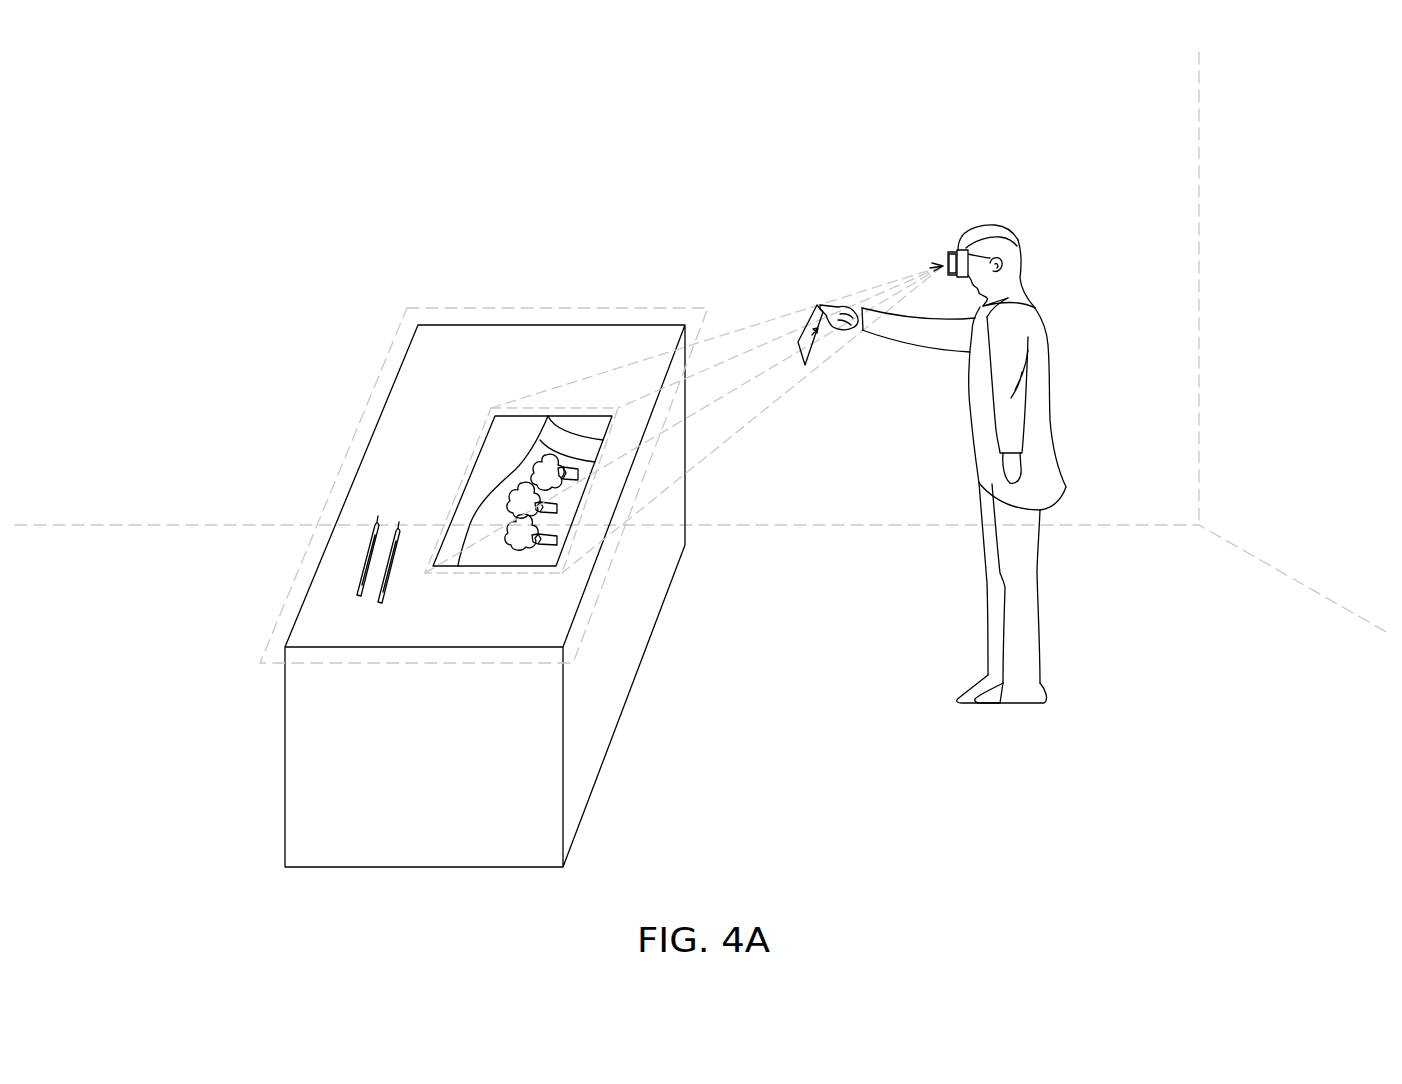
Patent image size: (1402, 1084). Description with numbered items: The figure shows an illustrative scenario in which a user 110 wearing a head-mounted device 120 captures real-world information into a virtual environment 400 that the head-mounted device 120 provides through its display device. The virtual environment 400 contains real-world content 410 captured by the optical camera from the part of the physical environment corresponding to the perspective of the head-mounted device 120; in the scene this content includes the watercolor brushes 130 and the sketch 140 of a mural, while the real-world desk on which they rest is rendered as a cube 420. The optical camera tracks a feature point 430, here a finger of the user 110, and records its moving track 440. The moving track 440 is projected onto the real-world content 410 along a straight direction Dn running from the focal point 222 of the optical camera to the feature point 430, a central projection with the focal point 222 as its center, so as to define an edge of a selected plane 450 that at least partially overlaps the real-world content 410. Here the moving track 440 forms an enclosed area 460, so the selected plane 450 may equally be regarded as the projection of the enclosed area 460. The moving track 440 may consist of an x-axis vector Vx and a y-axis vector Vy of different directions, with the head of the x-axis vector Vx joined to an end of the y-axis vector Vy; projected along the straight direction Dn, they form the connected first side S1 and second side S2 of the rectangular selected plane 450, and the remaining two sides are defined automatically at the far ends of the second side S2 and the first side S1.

The virtual environment 400 is at (79, 81).
The user 110 is at (1038, 328).
The head-mounted device 120 is at (966, 240).
The watercolor brushes 130 is at (367, 547).
The sketch 140 is at (495, 416).
The focal point 222 is at (943, 262).
The real-world content 410 is at (285, 607).
The cube 420 is at (607, 757).
The feature point 430 is at (822, 307).
The moving track 440 is at (795, 317).
The selected plane 450 is at (568, 548).
The enclosed area 460 is at (818, 328).
The straight direction Dn is at (855, 294).
The first side S1 is at (482, 583).
The second side S2 is at (590, 520).
The x-axis vector Vx is at (803, 360).
The y-axis vector Vy is at (810, 333).